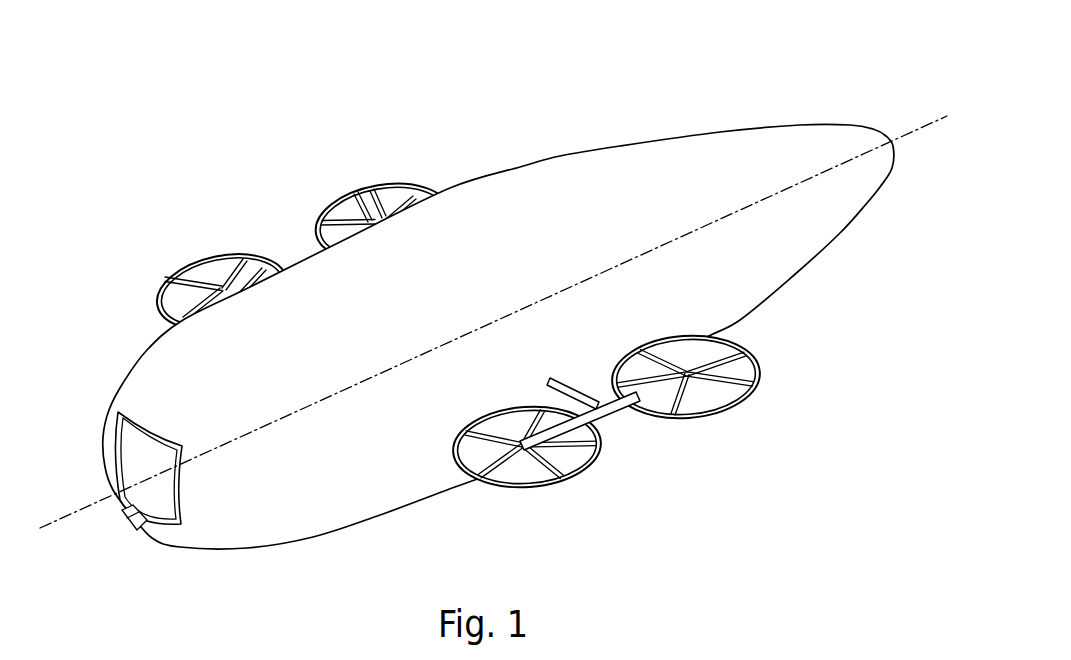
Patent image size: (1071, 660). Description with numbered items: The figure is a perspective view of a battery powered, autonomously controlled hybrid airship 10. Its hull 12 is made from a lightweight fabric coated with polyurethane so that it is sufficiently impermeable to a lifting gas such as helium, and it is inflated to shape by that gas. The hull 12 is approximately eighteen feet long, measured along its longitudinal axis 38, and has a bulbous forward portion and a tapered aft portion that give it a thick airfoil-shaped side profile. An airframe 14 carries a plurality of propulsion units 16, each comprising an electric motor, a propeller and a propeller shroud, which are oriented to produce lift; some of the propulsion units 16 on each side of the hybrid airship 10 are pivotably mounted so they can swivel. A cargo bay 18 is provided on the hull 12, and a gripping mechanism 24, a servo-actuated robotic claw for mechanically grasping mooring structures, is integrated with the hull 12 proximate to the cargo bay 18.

The hybrid airship 10 is at (613, 98).
The hull 12 is at (492, 200).
The airframe 14 is at (610, 420).
The propulsion unit 16 is at (183, 258).
The cargo bay 18 is at (130, 452).
The gripping mechanism 24 is at (140, 540).
The longitudinal axis 38 is at (918, 123).